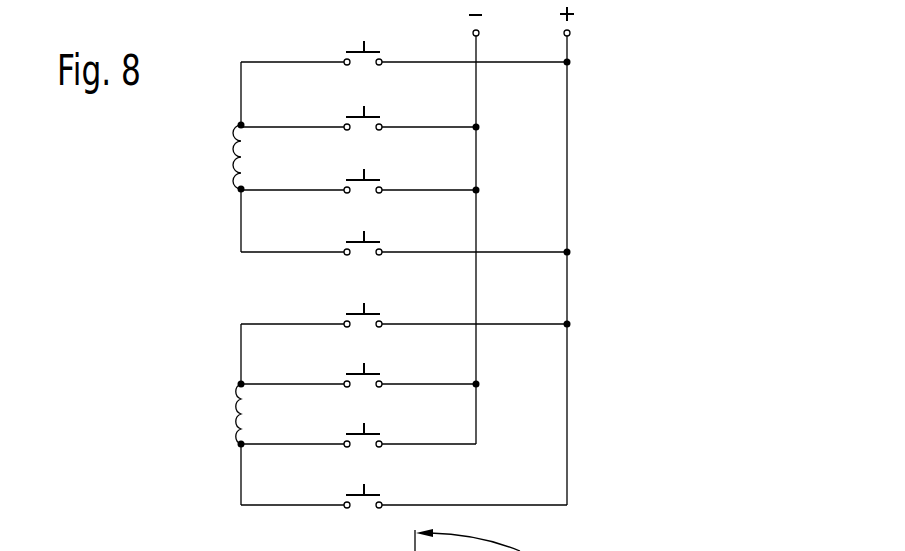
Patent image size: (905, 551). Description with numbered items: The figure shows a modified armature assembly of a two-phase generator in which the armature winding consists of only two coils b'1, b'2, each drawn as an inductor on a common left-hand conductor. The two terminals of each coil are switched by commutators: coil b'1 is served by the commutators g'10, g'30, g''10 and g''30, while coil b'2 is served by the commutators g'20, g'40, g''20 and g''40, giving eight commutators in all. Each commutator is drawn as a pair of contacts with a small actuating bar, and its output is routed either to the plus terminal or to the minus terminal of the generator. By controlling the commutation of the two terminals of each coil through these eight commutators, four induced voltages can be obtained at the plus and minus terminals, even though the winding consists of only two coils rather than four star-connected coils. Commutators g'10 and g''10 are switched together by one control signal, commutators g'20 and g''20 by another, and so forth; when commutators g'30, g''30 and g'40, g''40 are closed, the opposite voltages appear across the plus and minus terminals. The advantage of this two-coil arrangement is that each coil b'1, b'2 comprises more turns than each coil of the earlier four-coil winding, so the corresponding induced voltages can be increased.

The commutator g'10 is at (404, 45).
The commutator g'30 is at (358, 110).
The commutator g''10 is at (358, 173).
The commutator g''30 is at (404, 235).
The commutator g'20 is at (404, 307).
The commutator g'40 is at (358, 367).
The commutator g''20 is at (358, 427).
The commutator g''40 is at (404, 488).
The coil b'1 is at (202, 157).
The coil b'2 is at (202, 414).